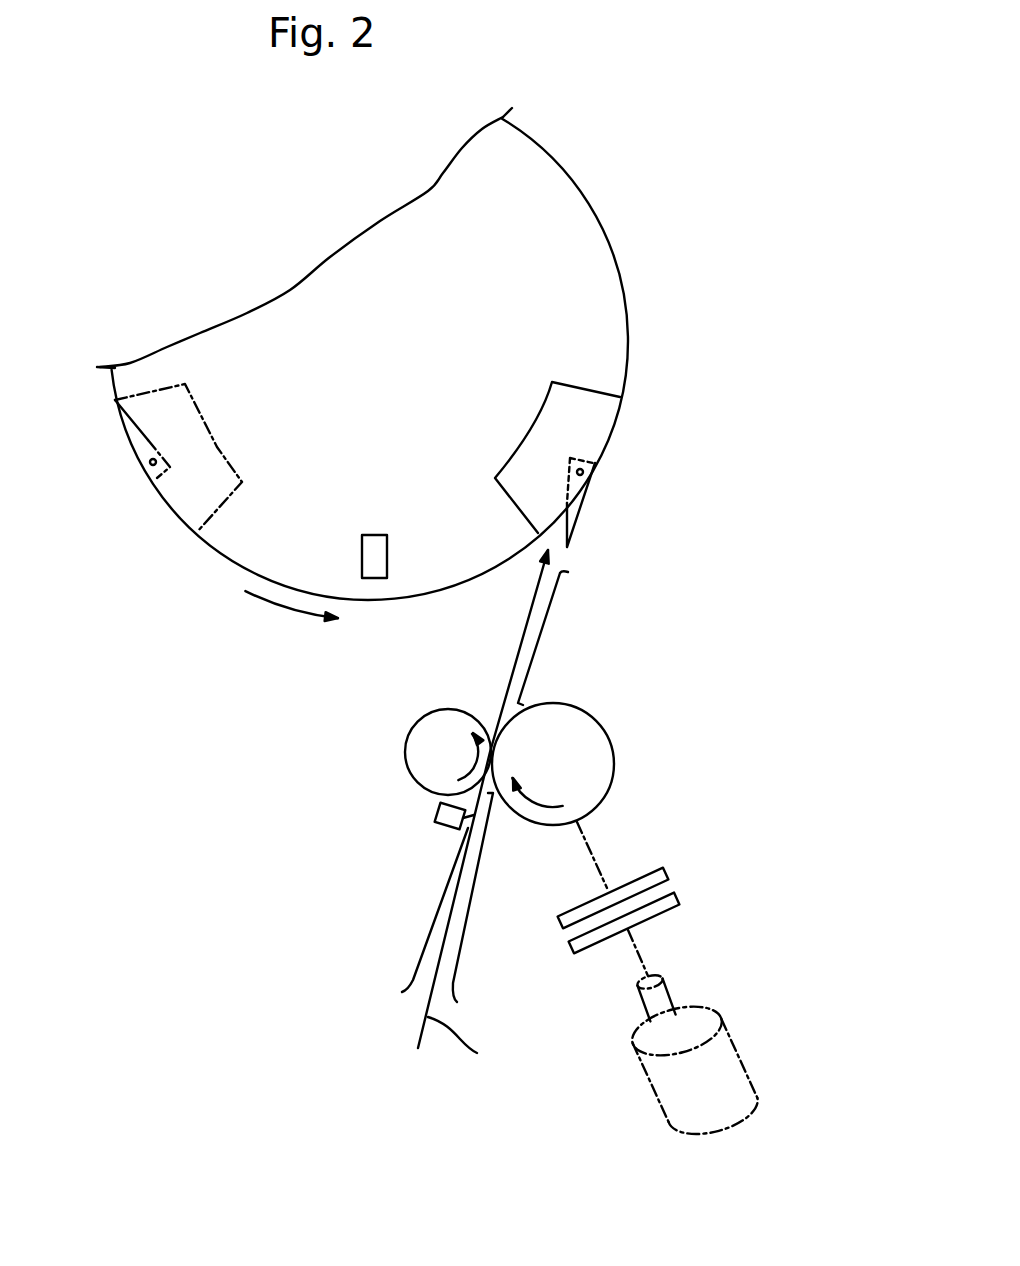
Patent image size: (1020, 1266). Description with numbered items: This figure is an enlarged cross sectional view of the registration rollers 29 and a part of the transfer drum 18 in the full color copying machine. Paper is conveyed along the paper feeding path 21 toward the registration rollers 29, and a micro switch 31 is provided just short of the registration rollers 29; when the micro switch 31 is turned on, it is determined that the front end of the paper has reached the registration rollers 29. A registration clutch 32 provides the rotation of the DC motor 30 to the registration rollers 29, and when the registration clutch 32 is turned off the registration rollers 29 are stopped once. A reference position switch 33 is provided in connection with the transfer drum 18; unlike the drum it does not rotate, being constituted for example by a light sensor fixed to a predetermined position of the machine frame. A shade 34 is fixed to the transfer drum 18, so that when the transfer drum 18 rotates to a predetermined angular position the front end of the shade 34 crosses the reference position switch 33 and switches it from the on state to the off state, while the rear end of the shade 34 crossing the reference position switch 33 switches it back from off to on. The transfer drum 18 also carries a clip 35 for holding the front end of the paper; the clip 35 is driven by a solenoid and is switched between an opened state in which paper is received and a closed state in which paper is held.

The transfer drum 18 is at (612, 258).
The paper feeding path 21 is at (428, 917).
The registration rollers 29 is at (412, 728).
The DC motor 30 is at (720, 1030).
The micro switch 31 is at (438, 820).
The registration clutch 32 is at (647, 872).
The reference position switch 33 is at (377, 535).
The shade 34 is at (532, 428).
The clip 35 is at (583, 508).